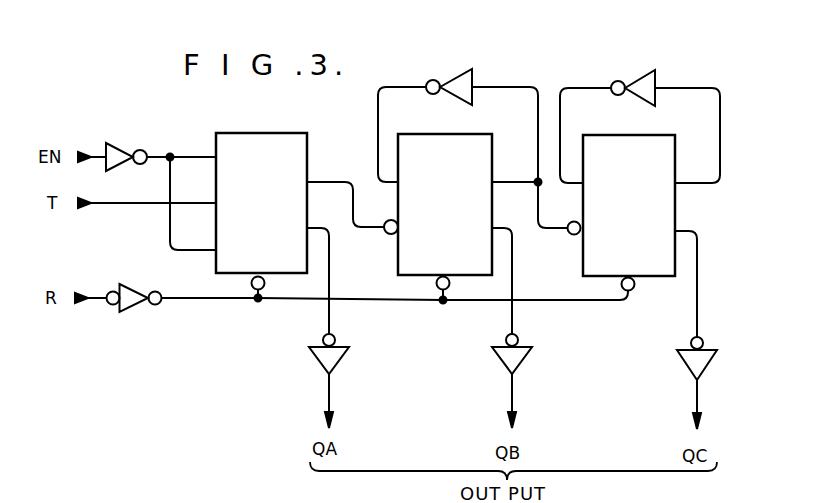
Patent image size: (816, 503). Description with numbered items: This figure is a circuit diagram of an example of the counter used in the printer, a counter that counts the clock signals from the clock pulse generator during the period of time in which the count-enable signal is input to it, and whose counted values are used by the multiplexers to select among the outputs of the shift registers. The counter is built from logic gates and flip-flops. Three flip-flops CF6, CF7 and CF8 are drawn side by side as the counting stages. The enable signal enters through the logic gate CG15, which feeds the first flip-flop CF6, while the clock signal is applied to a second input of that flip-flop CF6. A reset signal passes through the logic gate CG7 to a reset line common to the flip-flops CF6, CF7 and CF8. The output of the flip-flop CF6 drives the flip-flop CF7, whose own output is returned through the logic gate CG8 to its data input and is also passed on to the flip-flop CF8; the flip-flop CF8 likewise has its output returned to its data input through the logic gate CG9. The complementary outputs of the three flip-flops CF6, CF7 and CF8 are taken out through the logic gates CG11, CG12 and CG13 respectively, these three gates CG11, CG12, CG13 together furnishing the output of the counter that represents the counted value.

The logic gate CG15 is at (122, 142).
The flip-flop CF6 is at (260, 203).
The logic gate CG7 is at (134, 285).
The flip-flop CF7 is at (438, 204).
The logic gate CG8 is at (447, 75).
The flip-flop CF8 is at (622, 200).
The logic gate CG9 is at (630, 76).
The logic gate CG11 is at (313, 375).
The logic gate CG12 is at (497, 376).
The logic gate CG13 is at (677, 375).